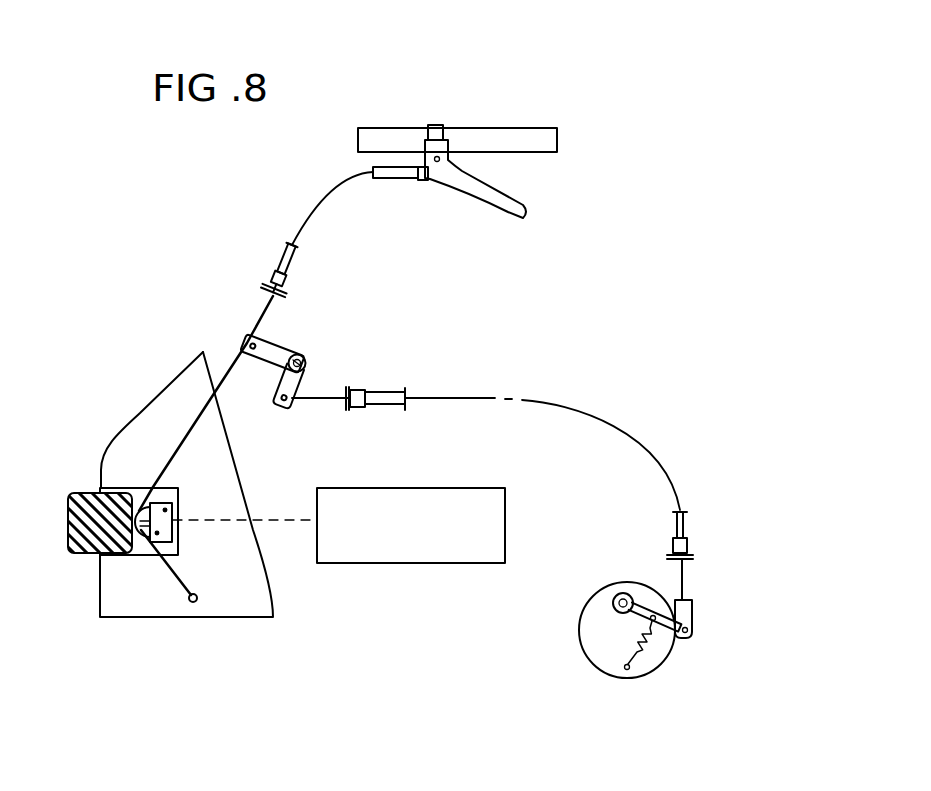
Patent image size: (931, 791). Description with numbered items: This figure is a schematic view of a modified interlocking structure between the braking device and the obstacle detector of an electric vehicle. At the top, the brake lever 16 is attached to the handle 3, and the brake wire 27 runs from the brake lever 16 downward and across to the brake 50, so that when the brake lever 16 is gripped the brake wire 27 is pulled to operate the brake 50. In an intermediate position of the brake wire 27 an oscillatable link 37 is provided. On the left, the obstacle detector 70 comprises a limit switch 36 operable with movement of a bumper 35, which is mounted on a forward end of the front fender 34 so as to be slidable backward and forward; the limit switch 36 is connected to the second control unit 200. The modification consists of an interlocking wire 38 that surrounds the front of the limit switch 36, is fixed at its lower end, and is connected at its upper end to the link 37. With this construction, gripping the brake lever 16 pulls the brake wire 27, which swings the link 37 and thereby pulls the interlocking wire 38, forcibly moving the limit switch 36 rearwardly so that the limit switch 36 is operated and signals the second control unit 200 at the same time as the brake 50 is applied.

The handle 3 is at (527, 128).
The brake lever 16 is at (473, 193).
The brake wire 27 is at (278, 260).
The front fender 34 is at (142, 423).
The bumper 35 is at (80, 502).
The limit switch 36 is at (168, 532).
The oscillatable link 37 is at (283, 345).
The interlocking wire 38 is at (178, 583).
The brake 50 is at (580, 613).
The obstacle detector 70 is at (274, 472).
The second control unit 200 is at (505, 498).